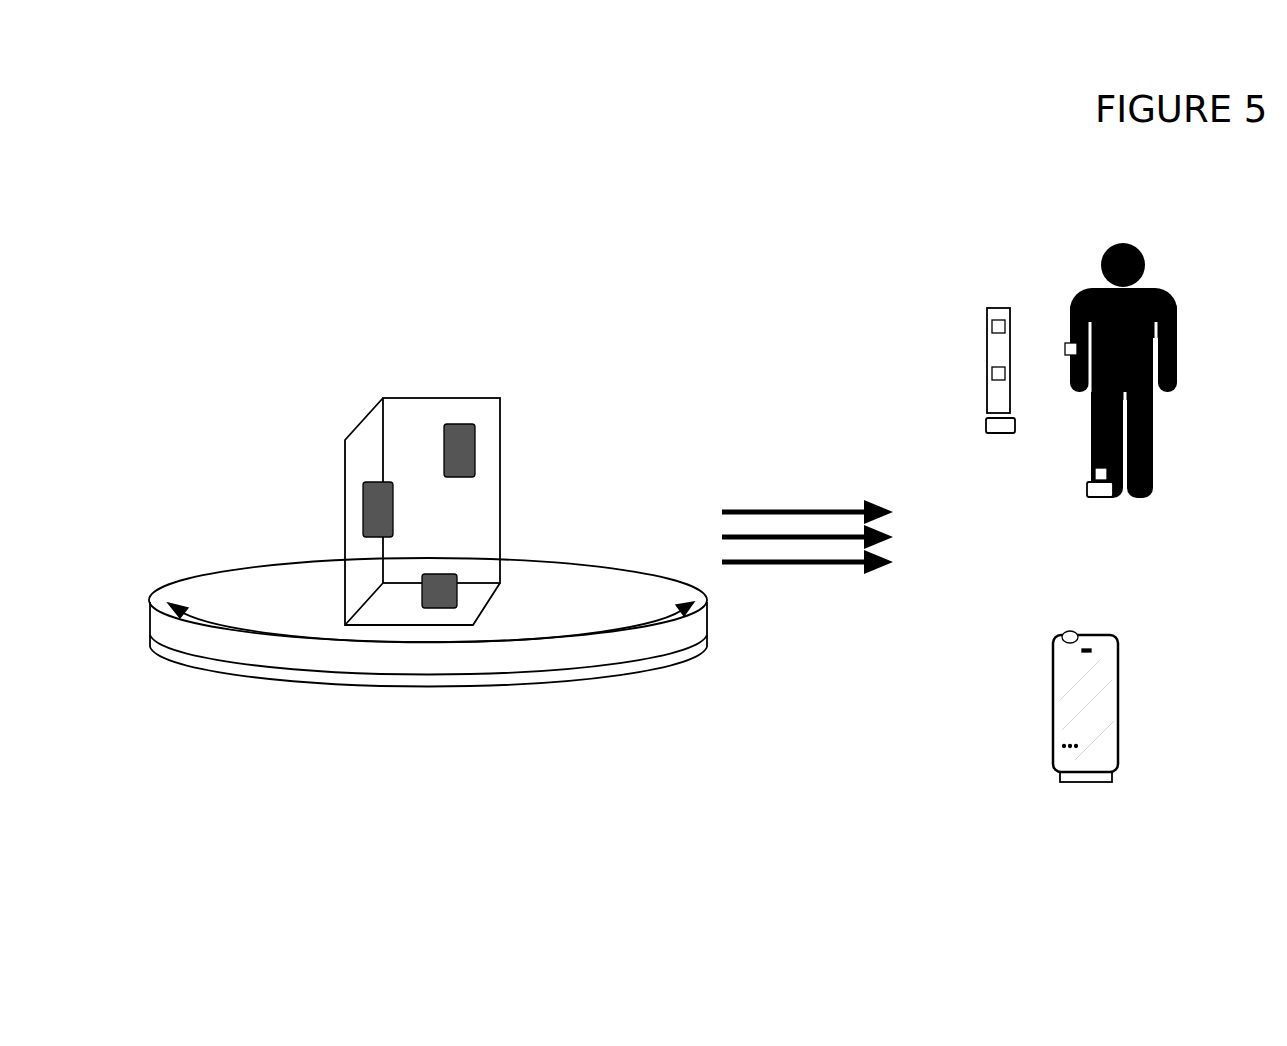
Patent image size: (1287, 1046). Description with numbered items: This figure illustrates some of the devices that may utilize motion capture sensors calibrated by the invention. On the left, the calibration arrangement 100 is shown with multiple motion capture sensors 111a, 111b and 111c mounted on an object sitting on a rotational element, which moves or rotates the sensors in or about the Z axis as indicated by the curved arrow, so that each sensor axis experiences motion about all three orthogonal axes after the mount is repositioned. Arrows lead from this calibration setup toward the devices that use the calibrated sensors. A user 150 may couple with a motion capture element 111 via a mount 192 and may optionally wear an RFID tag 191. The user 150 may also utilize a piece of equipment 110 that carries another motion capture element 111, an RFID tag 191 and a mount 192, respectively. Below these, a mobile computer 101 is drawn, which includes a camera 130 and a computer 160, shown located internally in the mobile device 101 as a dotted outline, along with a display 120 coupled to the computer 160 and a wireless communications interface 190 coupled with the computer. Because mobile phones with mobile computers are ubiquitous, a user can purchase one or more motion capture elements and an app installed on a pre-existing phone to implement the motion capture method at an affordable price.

The turntable system with object 100 is at (423, 318).
The motion capture sensor 111a is at (475, 448).
The motion capture sensor 111b is at (393, 512).
The motion capture sensor 111c is at (457, 592).
The user 150 is at (1097, 243).
The piece of equipment 110 is at (990, 310).
The motion capture element 111 is at (990, 326).
The RFID tag 191 is at (990, 373).
The mount 192 is at (987, 420).
The mobile computer 101 is at (1120, 760).
The display 120 is at (1098, 690).
The camera 130 is at (1062, 637).
The computer 160 is at (1060, 748).
The wireless communications interface 190 is at (1078, 790).